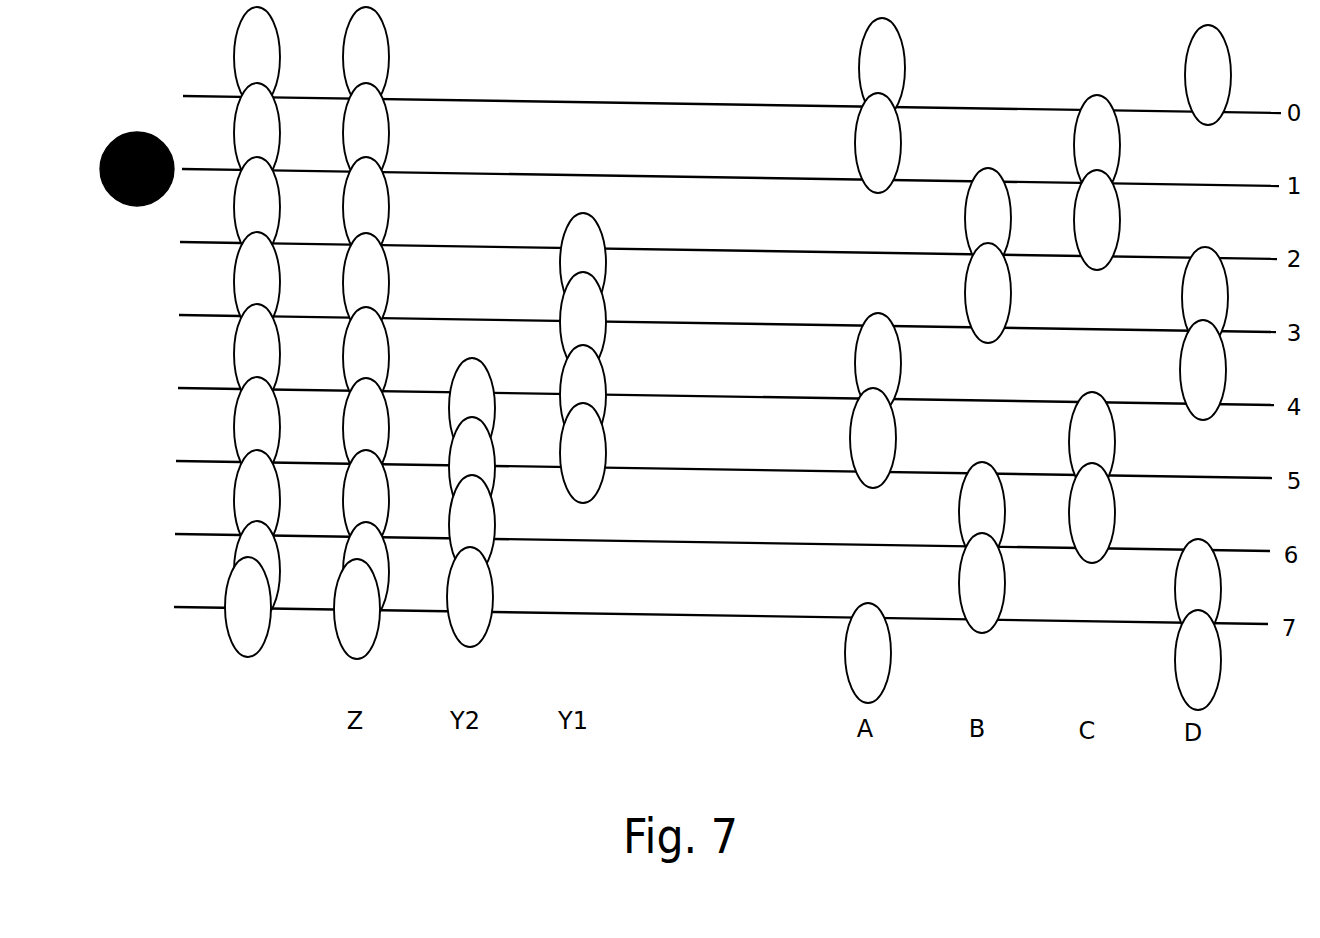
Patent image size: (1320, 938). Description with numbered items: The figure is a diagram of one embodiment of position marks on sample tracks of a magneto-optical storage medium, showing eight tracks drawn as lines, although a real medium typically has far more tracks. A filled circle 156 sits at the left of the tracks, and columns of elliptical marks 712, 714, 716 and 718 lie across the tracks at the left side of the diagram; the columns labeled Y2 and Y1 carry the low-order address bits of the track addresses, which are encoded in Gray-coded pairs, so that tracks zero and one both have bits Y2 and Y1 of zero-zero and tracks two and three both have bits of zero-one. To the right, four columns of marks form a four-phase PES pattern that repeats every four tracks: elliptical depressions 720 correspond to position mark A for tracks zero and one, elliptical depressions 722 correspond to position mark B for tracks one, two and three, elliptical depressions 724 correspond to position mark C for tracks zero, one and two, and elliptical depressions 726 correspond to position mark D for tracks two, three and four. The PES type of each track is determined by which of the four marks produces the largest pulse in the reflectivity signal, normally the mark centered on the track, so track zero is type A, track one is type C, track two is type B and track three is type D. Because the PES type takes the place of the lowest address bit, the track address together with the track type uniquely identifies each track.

The target point 156 is at (110, 197).
The first bead column 712 is at (227, 497).
The Z bead column 714 is at (388, 208).
The Y2 bead column 716 is at (473, 355).
The Y1 bead column 718 is at (562, 262).
The elliptical depressions 720 is at (858, 172).
The elliptical depressions 722 is at (972, 253).
The elliptical depressions 724 is at (1077, 167).
The elliptical depressions 726 is at (1183, 325).